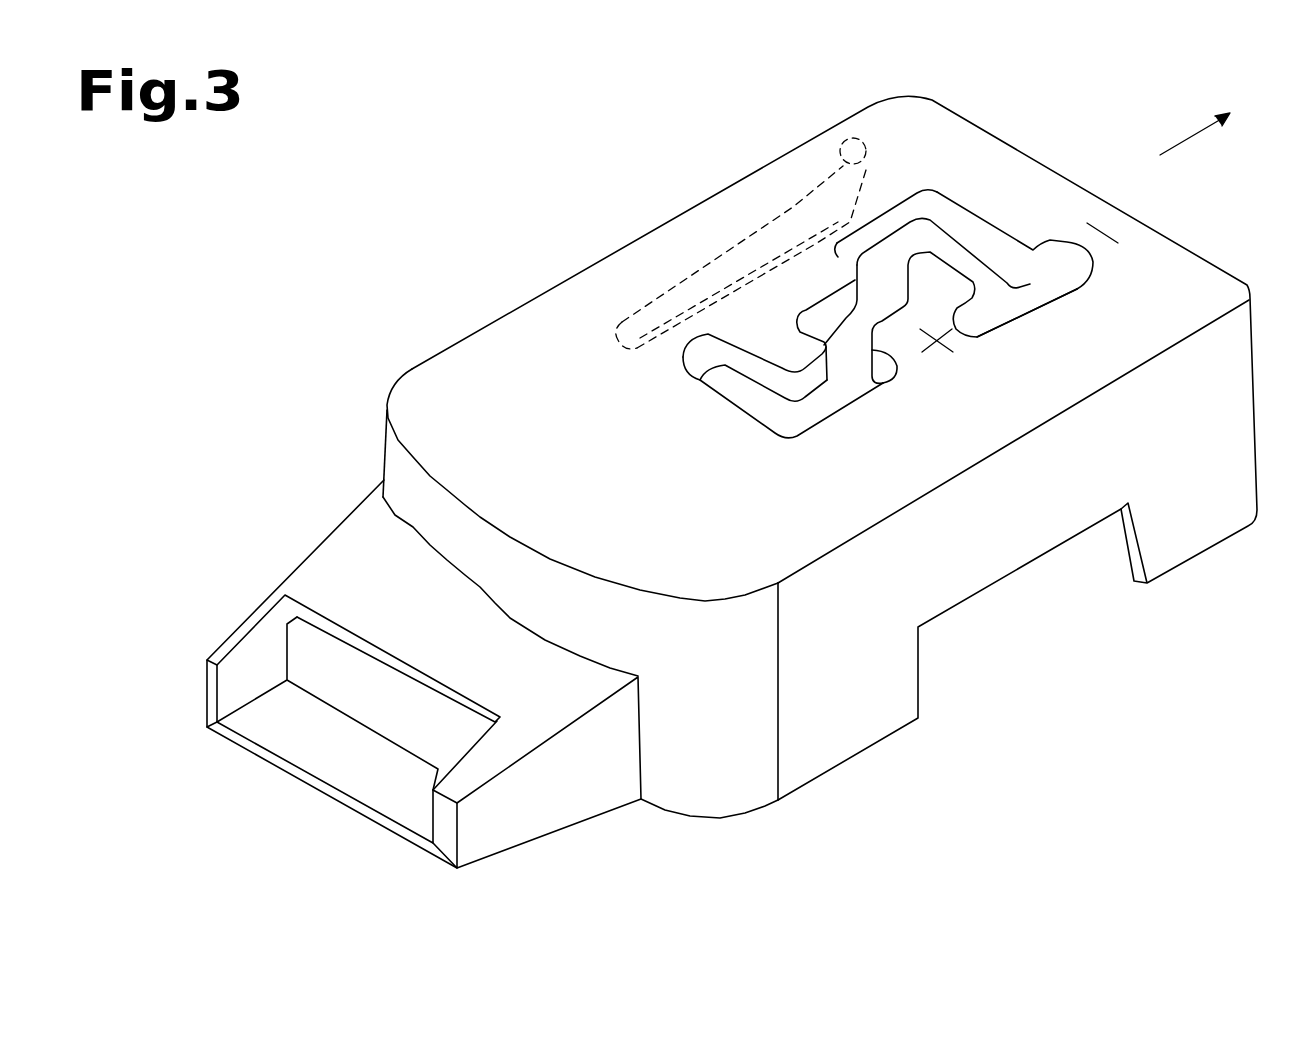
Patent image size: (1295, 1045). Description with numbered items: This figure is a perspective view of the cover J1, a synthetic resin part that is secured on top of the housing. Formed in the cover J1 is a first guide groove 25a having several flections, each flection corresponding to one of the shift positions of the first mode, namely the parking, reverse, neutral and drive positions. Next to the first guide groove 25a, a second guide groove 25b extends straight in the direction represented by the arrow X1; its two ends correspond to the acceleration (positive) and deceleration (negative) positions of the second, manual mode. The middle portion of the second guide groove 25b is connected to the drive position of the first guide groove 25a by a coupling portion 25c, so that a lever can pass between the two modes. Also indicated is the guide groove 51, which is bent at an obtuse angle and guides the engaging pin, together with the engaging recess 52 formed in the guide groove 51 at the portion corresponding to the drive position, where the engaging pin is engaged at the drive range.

The cover J1 is at (632, 188).
The first guide groove 25a is at (898, 205).
The second guide groove 25b is at (1033, 303).
The coupling portion 25c is at (973, 228).
The guide groove 51 is at (662, 352).
The engaging recess 52 is at (845, 136).
The arrow X1 is at (1218, 119).